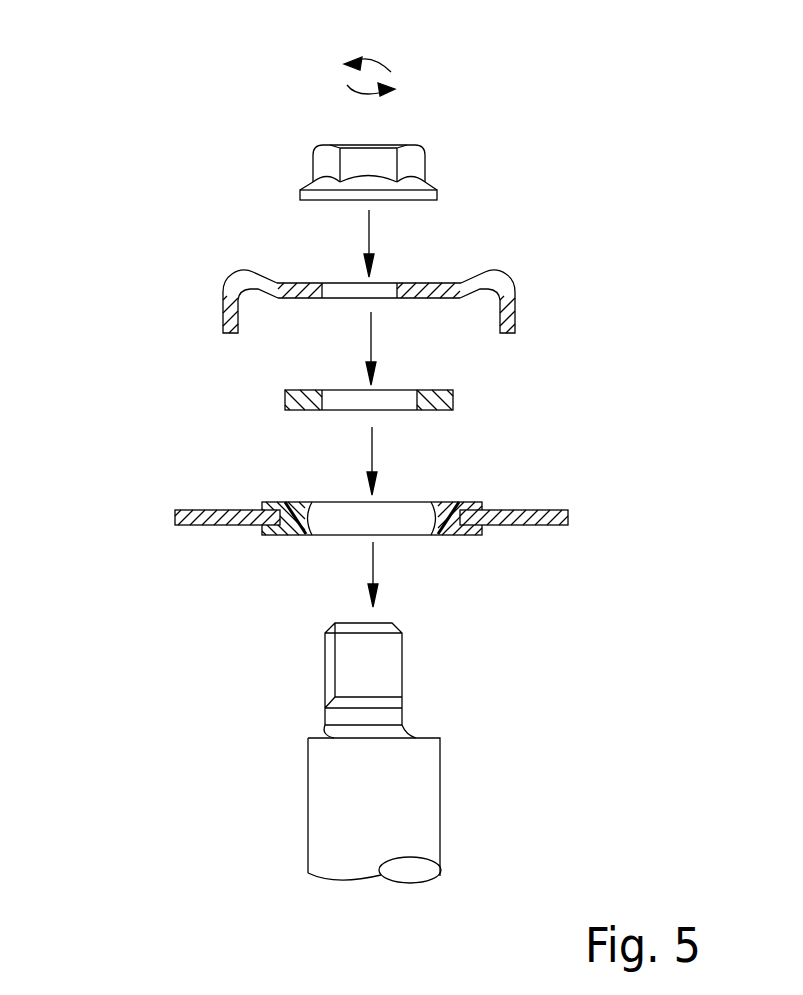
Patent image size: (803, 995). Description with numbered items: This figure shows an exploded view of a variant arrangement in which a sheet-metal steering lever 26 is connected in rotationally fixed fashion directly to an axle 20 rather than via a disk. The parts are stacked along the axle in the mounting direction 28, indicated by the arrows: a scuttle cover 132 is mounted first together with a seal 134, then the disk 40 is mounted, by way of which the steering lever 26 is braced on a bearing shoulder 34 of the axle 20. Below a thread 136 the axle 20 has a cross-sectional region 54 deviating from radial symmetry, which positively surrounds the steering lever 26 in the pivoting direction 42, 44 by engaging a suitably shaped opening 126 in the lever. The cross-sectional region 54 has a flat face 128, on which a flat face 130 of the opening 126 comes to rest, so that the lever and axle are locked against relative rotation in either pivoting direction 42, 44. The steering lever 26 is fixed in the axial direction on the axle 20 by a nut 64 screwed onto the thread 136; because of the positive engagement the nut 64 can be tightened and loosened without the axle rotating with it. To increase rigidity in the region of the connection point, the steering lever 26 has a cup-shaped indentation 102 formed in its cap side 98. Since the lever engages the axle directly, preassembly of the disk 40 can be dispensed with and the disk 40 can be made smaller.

The axle 20 is at (326, 819).
The steering lever 26 is at (375, 280).
The mounting direction 28 is at (369, 233).
The bearing shoulder 34 is at (427, 735).
The disk 40 is at (296, 403).
The pivoting direction 42 is at (380, 58).
The pivoting direction 44 is at (352, 96).
The cross-sectional region deviating from radial symmetry 54 is at (374, 732).
The nut 64 is at (418, 161).
The cap side 98 is at (480, 257).
The cup-shaped indentation 102 is at (278, 283).
The opening 126 is at (340, 290).
The flat face 128 is at (402, 672).
The flat face 130 is at (413, 283).
The scuttle cover 132 is at (513, 522).
The seal 134 is at (273, 535).
The thread 136 is at (335, 660).